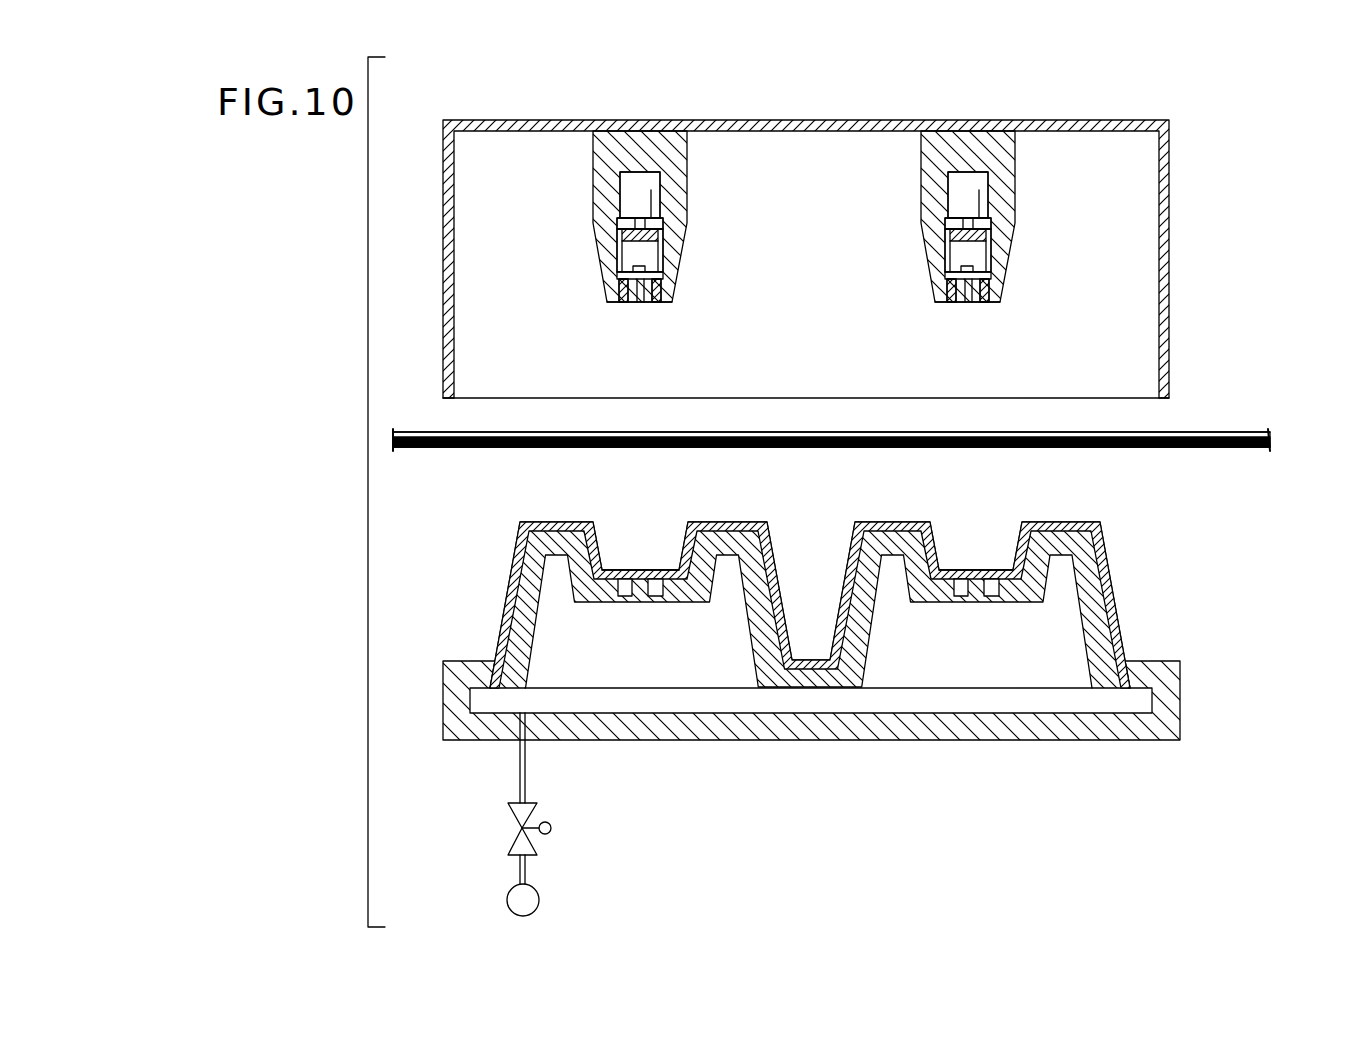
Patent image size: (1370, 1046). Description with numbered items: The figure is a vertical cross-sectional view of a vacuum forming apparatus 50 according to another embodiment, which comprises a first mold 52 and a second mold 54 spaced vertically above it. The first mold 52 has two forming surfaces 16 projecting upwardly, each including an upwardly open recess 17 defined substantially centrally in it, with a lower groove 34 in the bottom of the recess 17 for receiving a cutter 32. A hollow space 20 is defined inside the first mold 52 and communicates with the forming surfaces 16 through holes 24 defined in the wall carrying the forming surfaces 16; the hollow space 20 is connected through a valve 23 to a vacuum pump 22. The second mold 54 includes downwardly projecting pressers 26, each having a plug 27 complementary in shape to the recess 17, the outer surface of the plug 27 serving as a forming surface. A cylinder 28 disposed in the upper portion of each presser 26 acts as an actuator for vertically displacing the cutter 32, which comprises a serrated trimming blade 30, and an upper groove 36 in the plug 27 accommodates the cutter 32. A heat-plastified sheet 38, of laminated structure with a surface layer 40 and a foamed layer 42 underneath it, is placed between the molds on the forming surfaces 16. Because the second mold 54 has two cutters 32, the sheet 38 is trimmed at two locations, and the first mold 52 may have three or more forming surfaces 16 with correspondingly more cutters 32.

The forming surface 16 is at (808, 574).
The recess 17 is at (625, 563).
The hollow space 20 is at (885, 698).
The vacuum pump 22 is at (540, 900).
The valve 23 is at (556, 823).
The holes 24 is at (590, 522).
The presser 26 is at (578, 186).
The plug 27 is at (603, 293).
The cylinder 28 is at (645, 185).
The trimming blade 30 is at (618, 257).
The cutter 32 is at (665, 240).
The lower groove 34 is at (653, 598).
The upper groove 36 is at (652, 302).
The sheet 38 is at (1284, 438).
The surface layer 40 is at (1271, 435).
The foamed layer 42 is at (1250, 450).
The vacuum forming apparatus 50 is at (1267, 282).
The first mold 52 is at (855, 600).
The second mold 54 is at (1128, 103).